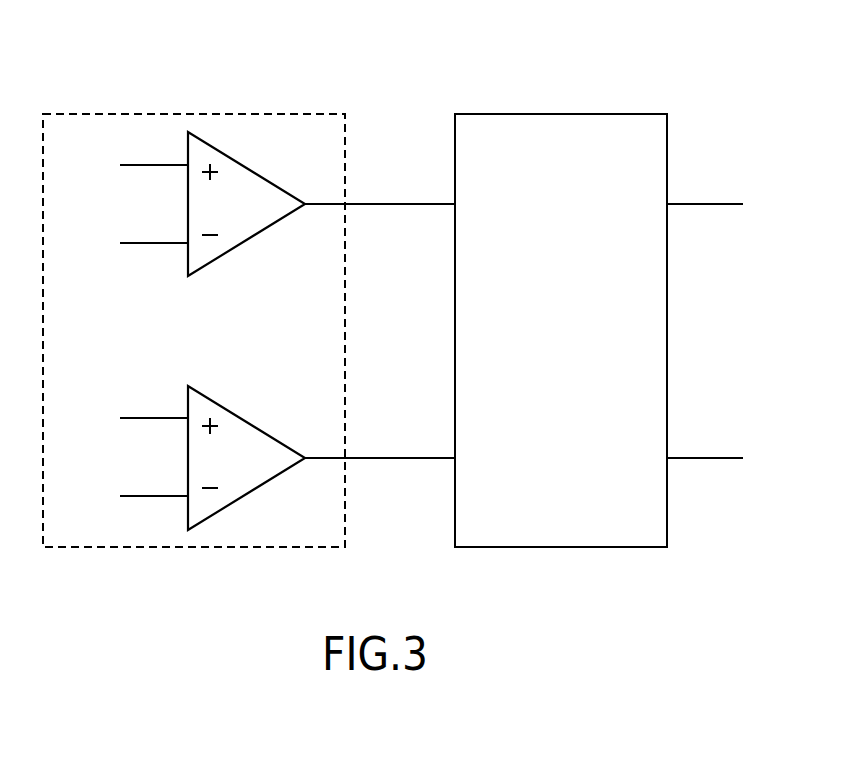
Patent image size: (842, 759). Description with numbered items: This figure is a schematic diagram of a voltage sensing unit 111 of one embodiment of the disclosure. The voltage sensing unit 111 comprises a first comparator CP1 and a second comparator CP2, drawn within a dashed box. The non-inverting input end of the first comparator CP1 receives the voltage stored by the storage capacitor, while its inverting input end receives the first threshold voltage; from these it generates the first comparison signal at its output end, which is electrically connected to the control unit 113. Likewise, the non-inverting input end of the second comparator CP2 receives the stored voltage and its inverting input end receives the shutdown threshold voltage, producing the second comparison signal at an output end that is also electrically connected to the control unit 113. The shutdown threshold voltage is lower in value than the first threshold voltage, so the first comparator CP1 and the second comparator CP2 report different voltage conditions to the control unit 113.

The voltage sensing unit 111 is at (249, 290).
The control unit 113 is at (560, 113).
The first comparator CP1 is at (242, 162).
The second comparator CP2 is at (242, 414).